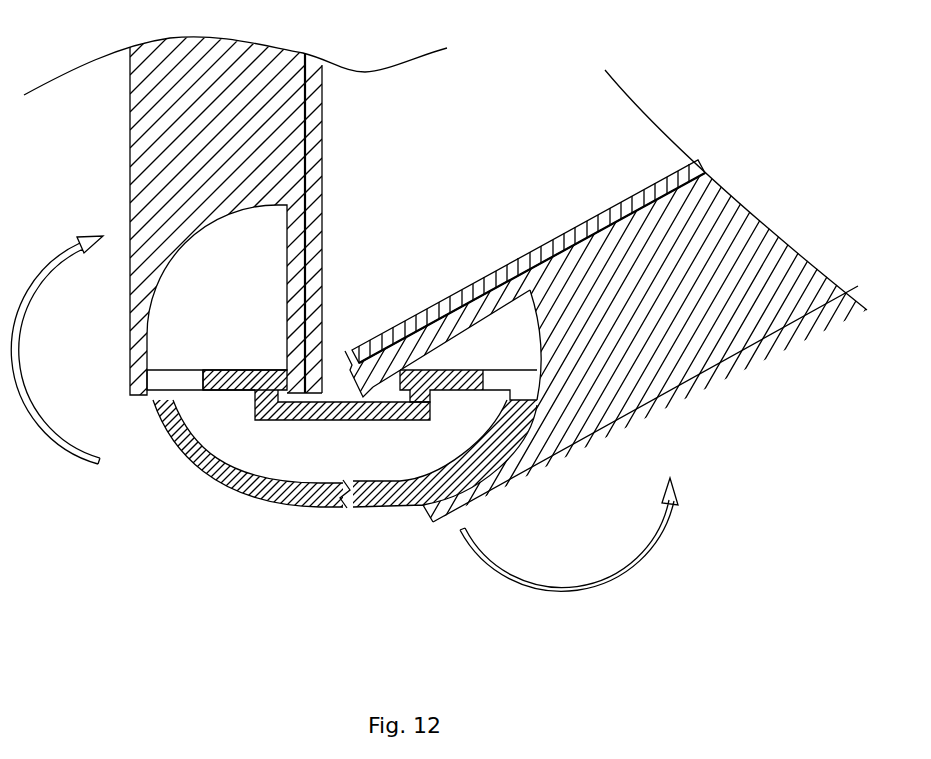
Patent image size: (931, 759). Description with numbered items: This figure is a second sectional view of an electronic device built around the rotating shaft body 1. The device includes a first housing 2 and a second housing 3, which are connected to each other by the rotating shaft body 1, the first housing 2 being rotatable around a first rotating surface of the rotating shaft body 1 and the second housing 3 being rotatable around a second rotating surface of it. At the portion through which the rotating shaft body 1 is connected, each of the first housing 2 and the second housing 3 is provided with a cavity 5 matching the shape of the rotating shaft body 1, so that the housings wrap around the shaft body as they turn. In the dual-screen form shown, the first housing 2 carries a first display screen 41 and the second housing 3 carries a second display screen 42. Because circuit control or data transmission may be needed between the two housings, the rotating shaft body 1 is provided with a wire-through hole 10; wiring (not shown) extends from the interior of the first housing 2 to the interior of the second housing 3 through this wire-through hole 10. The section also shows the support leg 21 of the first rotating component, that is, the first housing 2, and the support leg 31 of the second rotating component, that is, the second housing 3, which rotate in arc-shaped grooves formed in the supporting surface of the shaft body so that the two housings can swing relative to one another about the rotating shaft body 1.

The rotating shaft body 1 is at (319, 510).
The first housing 2 is at (170, 140).
The second housing 3 is at (690, 345).
The cavity 5 is at (188, 318).
The wire-through hole 10 is at (162, 378).
The support leg 21 is at (305, 385).
The support leg 31 is at (353, 365).
The first display screen 41 is at (318, 150).
The second display screen 42 is at (552, 240).